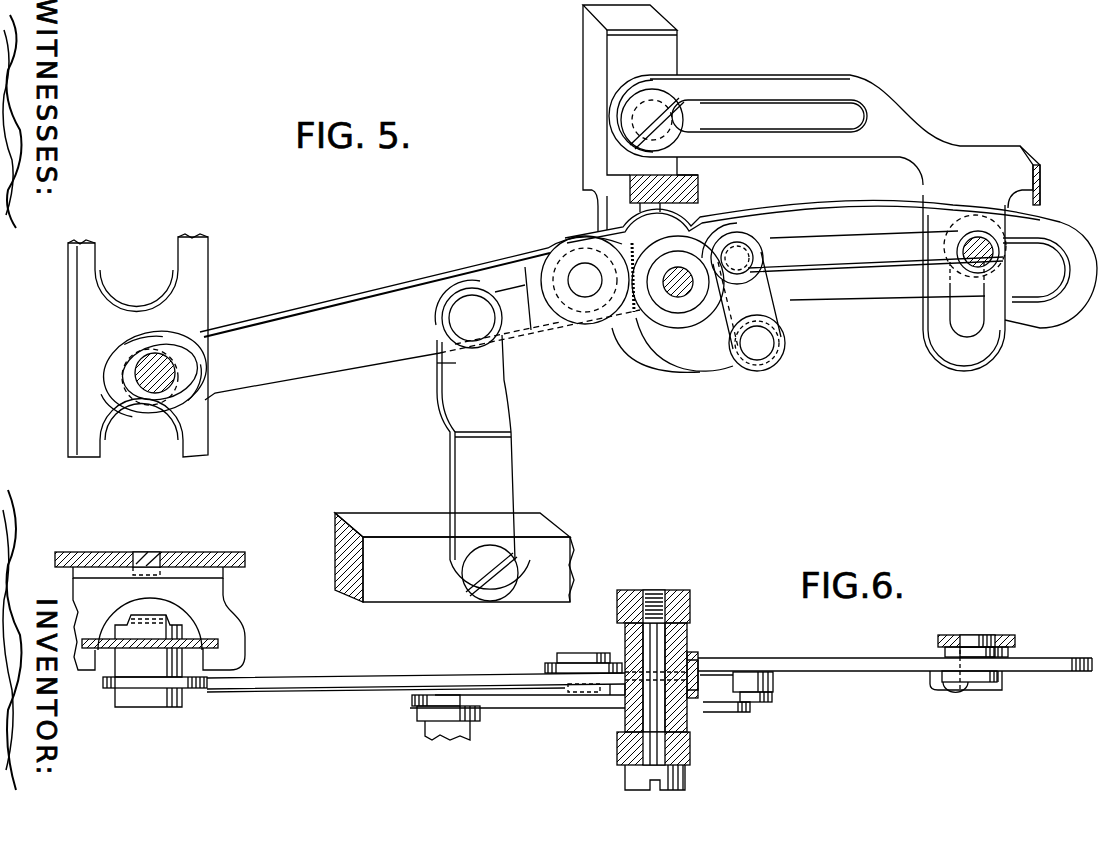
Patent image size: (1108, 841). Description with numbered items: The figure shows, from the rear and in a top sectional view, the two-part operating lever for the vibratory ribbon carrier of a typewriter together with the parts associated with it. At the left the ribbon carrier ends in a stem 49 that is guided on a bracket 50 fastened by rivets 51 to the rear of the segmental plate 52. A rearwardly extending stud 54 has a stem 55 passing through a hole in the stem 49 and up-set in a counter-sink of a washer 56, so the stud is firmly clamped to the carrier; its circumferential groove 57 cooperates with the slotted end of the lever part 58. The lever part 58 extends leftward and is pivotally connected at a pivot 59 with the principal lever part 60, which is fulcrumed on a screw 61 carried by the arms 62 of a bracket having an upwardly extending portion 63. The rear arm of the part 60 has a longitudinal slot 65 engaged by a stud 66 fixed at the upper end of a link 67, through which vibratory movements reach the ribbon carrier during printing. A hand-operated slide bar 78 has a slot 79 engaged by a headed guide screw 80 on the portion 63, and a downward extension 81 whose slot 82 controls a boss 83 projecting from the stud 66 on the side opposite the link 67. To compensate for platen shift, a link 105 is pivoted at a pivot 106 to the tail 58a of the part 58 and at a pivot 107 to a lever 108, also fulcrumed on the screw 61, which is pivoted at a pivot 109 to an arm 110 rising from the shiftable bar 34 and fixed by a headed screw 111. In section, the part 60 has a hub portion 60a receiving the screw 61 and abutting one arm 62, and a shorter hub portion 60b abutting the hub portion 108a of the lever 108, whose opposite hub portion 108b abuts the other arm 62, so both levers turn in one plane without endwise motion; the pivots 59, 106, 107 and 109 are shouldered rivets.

In FIG. 5, the shiftable bar 34 is at (390, 598).
In FIG. 5, the stem 49 is at (208, 290).
In FIG. 6, the stem 49 is at (215, 637).
In FIG. 6, the bracket 50 is at (248, 596).
In FIG. 6, the rivets 51 is at (150, 552).
In FIG. 6, the segmental plate 52 is at (190, 552).
In FIG. 5, the stud 54 is at (118, 368).
In FIG. 6, the stud 54 is at (155, 677).
In FIG. 6, the stem 55 is at (148, 619).
In FIG. 6, the washer 56 is at (172, 622).
In FIG. 5, the circumferential groove 57 is at (130, 383).
In FIG. 5, the lever part 58 is at (305, 378).
In FIG. 6, the lever part 58 is at (285, 678).
In FIG. 5, the tail 58a is at (698, 372).
In FIG. 5, the pivot 59 is at (583, 290).
In FIG. 6, the pivot 59 is at (575, 653).
In FIG. 5, the principal part of operating lever 60 is at (772, 217).
In FIG. 6, the principal part of operating lever 60 is at (835, 658).
In FIG. 6, the hub portion 60a is at (698, 665).
In FIG. 6, the shorter hub portion 60b is at (705, 678).
In FIG. 5, the fulcrum screw 61 is at (675, 295).
In FIG. 6, the fulcrum screw 61 is at (655, 658).
In FIG. 5, the bracket arms 62 is at (600, 210).
In FIG. 6, the bracket arms 62 is at (690, 598).
In FIG. 5, the upwardly extending bracket portion 63 is at (583, 65).
In FIG. 5, the slot 65 is at (877, 232).
In FIG. 5, the stud 66 is at (1000, 256).
In FIG. 6, the stud 66 is at (1007, 650).
In FIG. 6, the link 67 is at (962, 690).
In FIG. 5, the slide bar 78 is at (920, 122).
In FIG. 5, the slot 79 is at (785, 100).
In FIG. 5, the headed guide screw 80 is at (690, 116).
In FIG. 5, the downward extension 81 is at (1000, 355).
In FIG. 6, the downward extension 81 is at (995, 635).
In FIG. 5, the slot 82 is at (952, 320).
In FIG. 6, the boss 83 is at (965, 635).
In FIG. 5, the link 105 is at (770, 312).
In FIG. 5, the pivot 106 is at (775, 370).
In FIG. 6, the pivot 106 is at (772, 695).
In FIG. 5, the pivot 107 is at (765, 258).
In FIG. 6, the pivot 107 is at (765, 672).
In FIG. 5, the lever 108 is at (515, 283).
In FIG. 6, the lever 108 is at (528, 708).
In FIG. 6, the hub portion 108a is at (612, 700).
In FIG. 6, the hub portion 108b is at (710, 712).
In FIG. 5, the pivot 109 is at (468, 314).
In FIG. 6, the pivot 109 is at (436, 721).
In FIG. 5, the arm 110 is at (505, 415).
In FIG. 6, the arm 110 is at (472, 738).
In FIG. 5, the headed screw 111 is at (517, 575).